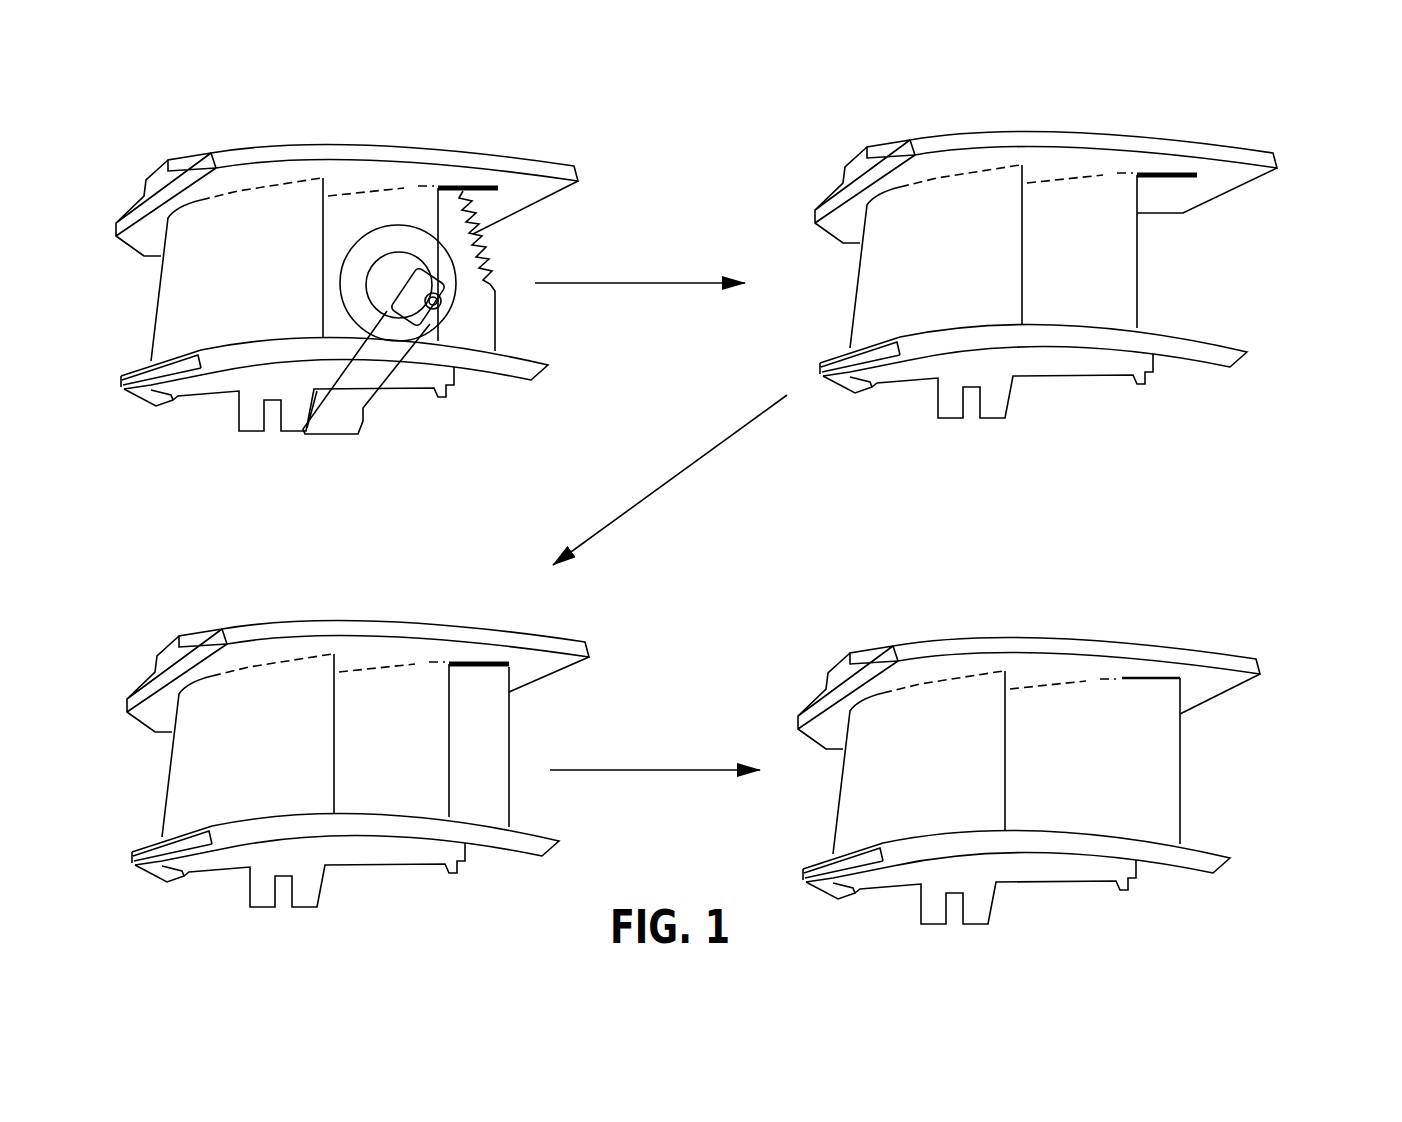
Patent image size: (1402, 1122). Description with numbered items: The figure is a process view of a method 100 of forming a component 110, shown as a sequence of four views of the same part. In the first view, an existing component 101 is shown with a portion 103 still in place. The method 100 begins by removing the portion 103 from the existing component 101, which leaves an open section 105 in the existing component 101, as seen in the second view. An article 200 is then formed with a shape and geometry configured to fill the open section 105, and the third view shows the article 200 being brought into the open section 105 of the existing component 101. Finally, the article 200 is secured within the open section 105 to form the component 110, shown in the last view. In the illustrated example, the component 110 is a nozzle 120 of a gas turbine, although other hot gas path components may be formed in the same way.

The method 100 is at (300, 112).
The existing component 101 is at (453, 130).
The portion 103 is at (467, 277).
The open section 105 is at (1170, 252).
The component 110 is at (1263, 637).
The nozzle 120 is at (1263, 693).
The article 200 is at (487, 753).